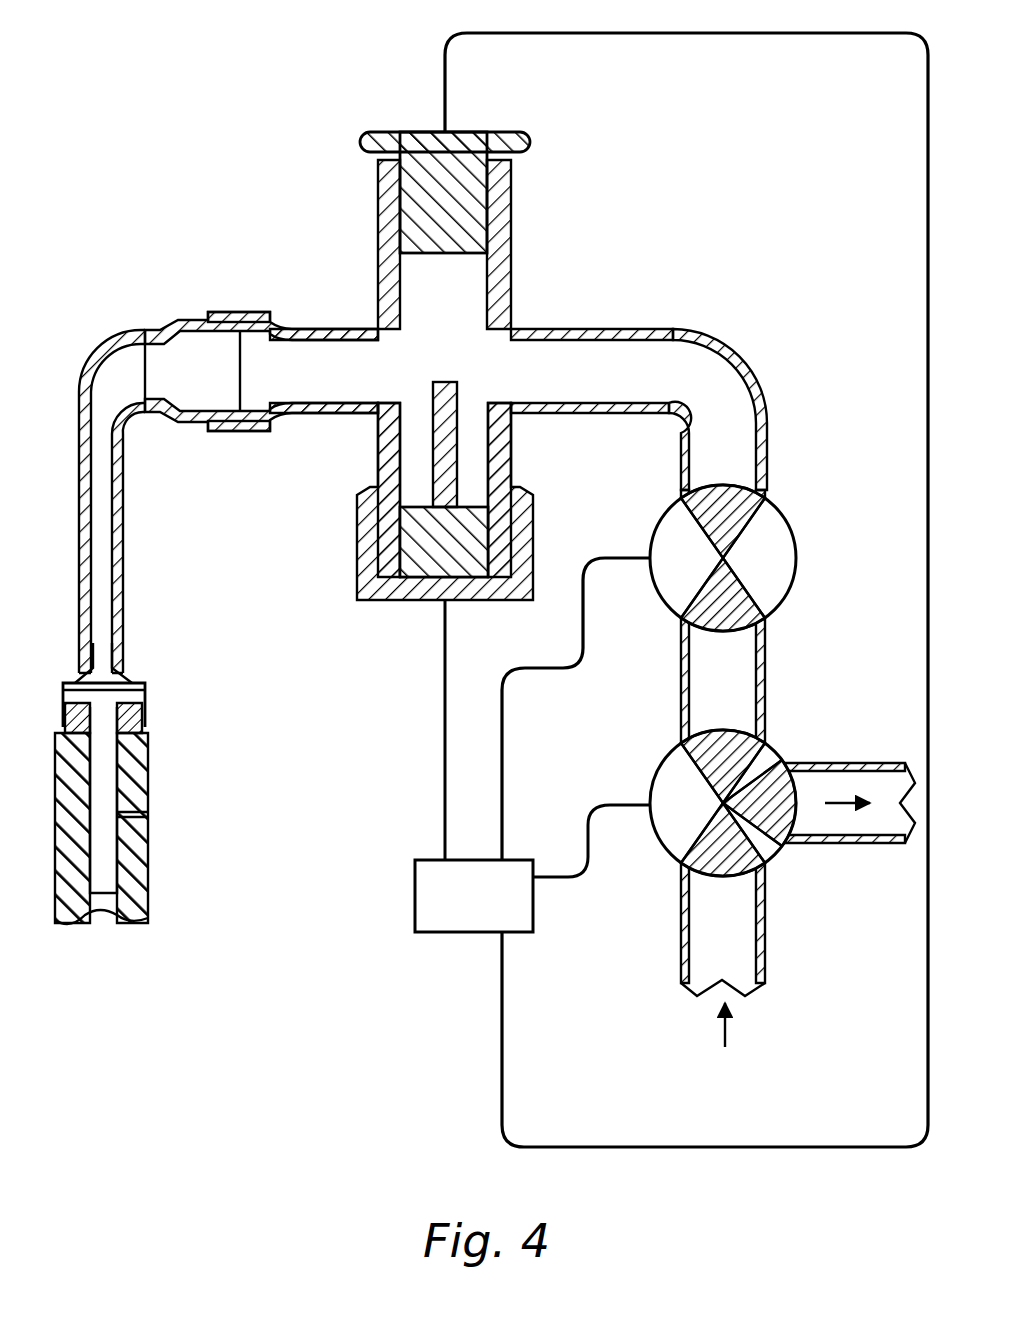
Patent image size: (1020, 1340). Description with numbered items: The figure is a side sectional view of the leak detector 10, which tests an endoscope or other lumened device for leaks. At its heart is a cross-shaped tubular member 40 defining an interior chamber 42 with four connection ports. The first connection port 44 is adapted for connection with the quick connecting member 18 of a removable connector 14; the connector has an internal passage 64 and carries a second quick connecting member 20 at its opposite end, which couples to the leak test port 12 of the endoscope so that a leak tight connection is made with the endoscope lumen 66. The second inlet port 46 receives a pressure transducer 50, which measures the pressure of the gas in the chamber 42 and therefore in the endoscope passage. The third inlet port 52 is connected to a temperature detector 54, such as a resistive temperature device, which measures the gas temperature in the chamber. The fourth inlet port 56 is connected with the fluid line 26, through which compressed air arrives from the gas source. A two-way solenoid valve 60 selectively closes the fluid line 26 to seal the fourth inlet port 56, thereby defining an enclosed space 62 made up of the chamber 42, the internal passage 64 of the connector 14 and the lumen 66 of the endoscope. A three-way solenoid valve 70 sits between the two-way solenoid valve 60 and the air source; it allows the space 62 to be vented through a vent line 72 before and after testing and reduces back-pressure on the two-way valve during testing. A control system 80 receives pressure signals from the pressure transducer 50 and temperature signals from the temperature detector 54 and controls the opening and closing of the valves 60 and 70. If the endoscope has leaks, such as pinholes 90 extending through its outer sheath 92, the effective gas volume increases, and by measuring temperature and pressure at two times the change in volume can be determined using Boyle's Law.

The leak detector 10 is at (290, 96).
The leak test port 12 is at (150, 718).
The removable connector 14 is at (82, 378).
The quick connecting member 18 is at (172, 320).
The quick connecting member 20 is at (145, 680).
The fluid line 26 is at (735, 905).
The cross-shaped tubular member 40 is at (368, 255).
The interior chamber 42 is at (455, 355).
The first connection port 44 is at (240, 432).
The second inlet port 46 is at (500, 265).
The pressure transducer 50 is at (480, 133).
The third inlet port 52 is at (378, 468).
The temperature detector 54 is at (428, 565).
The fourth inlet port 56 is at (772, 400).
The two-way solenoid valve 60 is at (765, 548).
The enclosed space 62 is at (335, 385).
The internal passage 64 is at (105, 522).
The lumen 66 is at (148, 745).
The three-way solenoid valve 70 is at (668, 795).
The vent line 72 is at (845, 780).
The control system 80 is at (415, 893).
The pinholes 90 is at (148, 815).
The outer sheath 92 is at (97, 772).